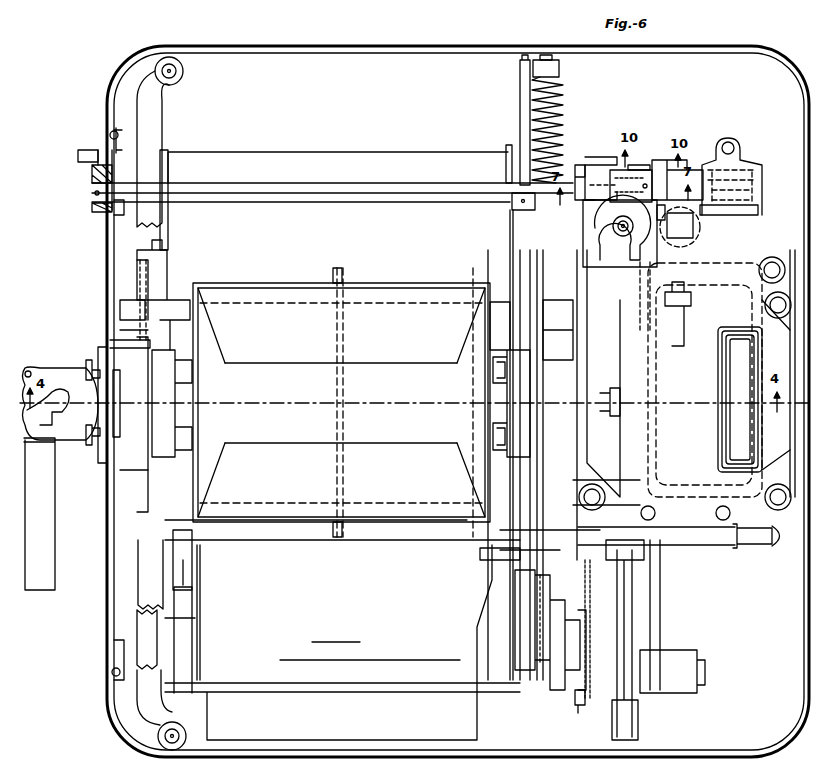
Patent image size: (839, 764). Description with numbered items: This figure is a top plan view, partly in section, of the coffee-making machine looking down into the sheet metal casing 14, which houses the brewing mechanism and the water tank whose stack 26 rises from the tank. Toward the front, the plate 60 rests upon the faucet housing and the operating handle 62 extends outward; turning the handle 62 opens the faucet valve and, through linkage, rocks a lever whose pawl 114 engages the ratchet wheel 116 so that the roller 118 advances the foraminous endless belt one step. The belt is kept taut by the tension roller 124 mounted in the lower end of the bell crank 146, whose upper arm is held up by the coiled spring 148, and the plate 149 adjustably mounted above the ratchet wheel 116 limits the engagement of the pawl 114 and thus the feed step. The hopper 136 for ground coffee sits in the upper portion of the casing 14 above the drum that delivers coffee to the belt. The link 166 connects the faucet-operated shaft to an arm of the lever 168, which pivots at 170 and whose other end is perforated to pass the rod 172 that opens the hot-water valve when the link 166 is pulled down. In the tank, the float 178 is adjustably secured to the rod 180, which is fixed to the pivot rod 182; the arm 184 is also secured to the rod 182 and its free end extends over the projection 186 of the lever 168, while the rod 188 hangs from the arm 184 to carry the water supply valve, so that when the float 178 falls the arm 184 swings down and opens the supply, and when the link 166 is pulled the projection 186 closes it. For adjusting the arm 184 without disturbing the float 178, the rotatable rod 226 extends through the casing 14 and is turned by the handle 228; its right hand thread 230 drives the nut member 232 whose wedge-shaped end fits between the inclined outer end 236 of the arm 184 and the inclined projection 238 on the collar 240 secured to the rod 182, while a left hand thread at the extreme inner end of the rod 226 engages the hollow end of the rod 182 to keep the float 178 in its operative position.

The casing 14 is at (805, 616).
The stack 26 is at (730, 440).
The plate 60 is at (58, 372).
The operating handle 62 is at (46, 545).
The pawl 114 is at (578, 690).
The ratchet wheel 116 is at (578, 710).
The roller 118 is at (515, 690).
The roller 124 is at (445, 165).
The hopper 136 is at (290, 285).
The bell crank 146 is at (524, 97).
The coiled spring 148 is at (565, 100).
The plate 149 is at (578, 670).
The link 166 is at (628, 600).
The lever 168 is at (620, 455).
The pivot 170 is at (608, 395).
The rod 172 is at (618, 228).
The float 178 is at (703, 545).
The rod 180 is at (724, 298).
The pivot rod 182 is at (760, 185).
The arm 184 is at (712, 210).
The projection 186 is at (647, 265).
The rod 188 is at (700, 240).
The rotatable rod 226 is at (313, 190).
The handle 228 is at (90, 152).
The right hand thread 230 is at (580, 165).
The nut member 232 is at (593, 160).
The outer end 236 is at (655, 162).
The projection 238 is at (640, 168).
The collar 240 is at (625, 165).